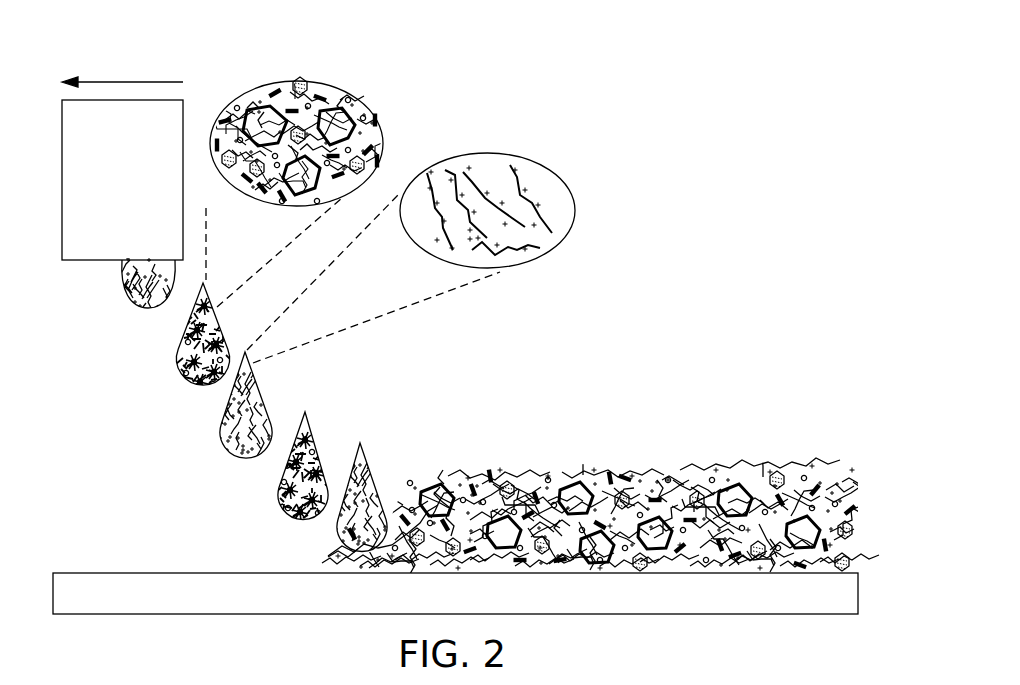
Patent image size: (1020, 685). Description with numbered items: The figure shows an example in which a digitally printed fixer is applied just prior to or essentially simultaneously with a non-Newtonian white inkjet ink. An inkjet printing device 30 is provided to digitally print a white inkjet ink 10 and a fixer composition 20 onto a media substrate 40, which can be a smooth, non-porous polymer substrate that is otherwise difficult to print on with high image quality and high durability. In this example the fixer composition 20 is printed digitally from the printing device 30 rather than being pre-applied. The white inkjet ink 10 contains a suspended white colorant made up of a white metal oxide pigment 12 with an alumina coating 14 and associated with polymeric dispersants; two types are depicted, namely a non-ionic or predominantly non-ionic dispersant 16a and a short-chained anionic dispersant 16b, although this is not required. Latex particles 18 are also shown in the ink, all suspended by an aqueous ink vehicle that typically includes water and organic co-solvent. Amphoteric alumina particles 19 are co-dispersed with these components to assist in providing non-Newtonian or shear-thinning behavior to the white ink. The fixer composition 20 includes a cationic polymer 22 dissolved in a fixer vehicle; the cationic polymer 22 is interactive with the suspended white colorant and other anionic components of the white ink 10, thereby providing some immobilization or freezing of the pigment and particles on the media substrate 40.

The white inkjet ink 10 is at (432, 83).
The white metal oxide pigment 12 is at (267, 120).
The alumina coating 14 is at (300, 86).
The non-ionic dispersant 16a is at (343, 98).
The short-chained anionic dispersant 16b is at (247, 108).
The latex particles 18 is at (232, 140).
The amphoteric alumina particles 19 is at (382, 132).
The fixer composition 20 is at (577, 193).
The cationic polymer 22 is at (517, 163).
The inkjet printing device 30 is at (108, 192).
The media substrate 40 is at (441, 605).